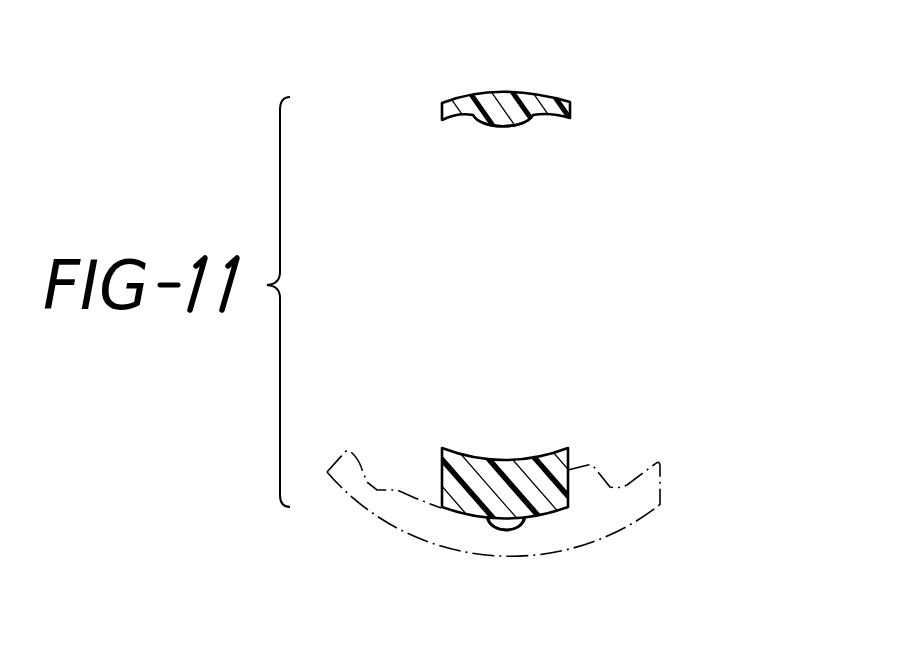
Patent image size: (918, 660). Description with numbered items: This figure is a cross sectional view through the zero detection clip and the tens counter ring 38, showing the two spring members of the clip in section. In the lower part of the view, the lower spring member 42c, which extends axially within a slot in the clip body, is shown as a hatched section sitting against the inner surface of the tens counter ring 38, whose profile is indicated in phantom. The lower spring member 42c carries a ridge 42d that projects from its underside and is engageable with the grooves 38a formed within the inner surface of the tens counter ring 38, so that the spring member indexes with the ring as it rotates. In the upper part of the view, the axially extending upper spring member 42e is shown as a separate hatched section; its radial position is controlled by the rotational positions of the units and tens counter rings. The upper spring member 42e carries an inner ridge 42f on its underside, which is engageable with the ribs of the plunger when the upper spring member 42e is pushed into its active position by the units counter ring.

The upper spring member 42e is at (536, 93).
The inner ridge 42f is at (515, 127).
The lower spring member 42c is at (547, 450).
The ridge 42d is at (487, 523).
The grooves 38a is at (520, 524).
The tens counter ring 38 is at (661, 488).